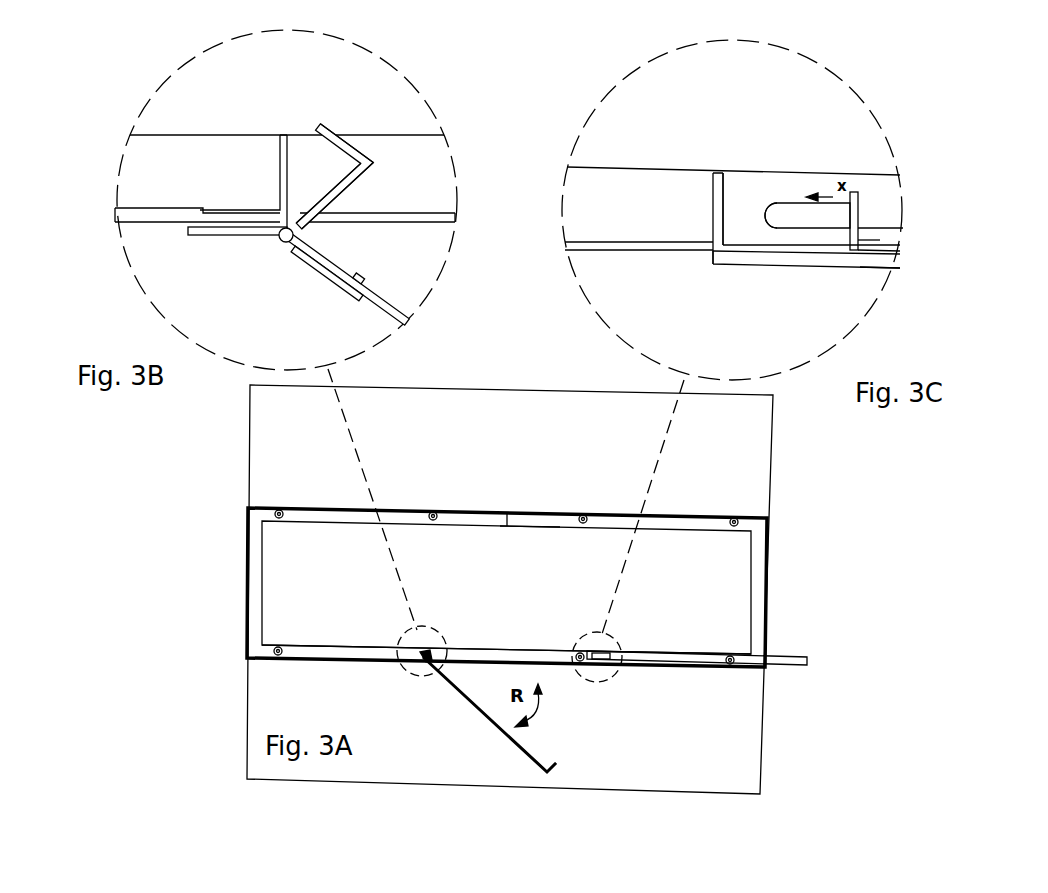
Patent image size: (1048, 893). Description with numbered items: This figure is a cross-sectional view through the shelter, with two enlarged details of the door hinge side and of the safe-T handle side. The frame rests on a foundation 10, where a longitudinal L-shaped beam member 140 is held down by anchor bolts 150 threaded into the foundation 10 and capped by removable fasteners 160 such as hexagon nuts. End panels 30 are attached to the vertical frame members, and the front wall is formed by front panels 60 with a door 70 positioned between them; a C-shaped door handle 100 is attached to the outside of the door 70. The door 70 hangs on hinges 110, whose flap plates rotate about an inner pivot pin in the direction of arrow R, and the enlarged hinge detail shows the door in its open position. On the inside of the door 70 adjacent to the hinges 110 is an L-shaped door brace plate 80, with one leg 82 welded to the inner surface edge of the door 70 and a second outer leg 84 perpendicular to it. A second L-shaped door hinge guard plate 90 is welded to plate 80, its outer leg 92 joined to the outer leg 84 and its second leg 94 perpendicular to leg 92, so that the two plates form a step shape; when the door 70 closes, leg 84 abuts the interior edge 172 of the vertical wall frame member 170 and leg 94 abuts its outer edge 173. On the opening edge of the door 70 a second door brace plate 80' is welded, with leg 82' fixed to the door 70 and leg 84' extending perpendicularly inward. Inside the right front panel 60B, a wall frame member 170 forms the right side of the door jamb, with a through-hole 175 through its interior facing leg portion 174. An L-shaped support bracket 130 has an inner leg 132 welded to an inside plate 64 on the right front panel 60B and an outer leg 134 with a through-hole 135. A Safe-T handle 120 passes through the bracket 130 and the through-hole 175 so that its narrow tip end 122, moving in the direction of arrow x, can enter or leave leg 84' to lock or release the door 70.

In FIG. 3A, the foundation 10 is at (547, 589).
In FIG. 3A, the end panel 30 is at (546, 587).
In FIG. 3B, the front panel 60 is at (262, 240).
In FIG. 3A, the front panel 60 is at (506, 677).
In FIG. 3C, the right front panel 60B is at (806, 282).
In FIG. 3C, the inside plate 64 is at (904, 286).
In FIG. 3B, the door 70 is at (348, 290).
In FIG. 3A, the door 70 is at (462, 716).
In FIG. 3B, the door brace plate 80 is at (390, 264).
In FIG. 3A, the second door brace plate 80' is at (586, 776).
In FIG. 3B, the leg 82 is at (344, 264).
In FIG. 3A, the leg 82' is at (561, 746).
In FIG. 3B, the outer leg 84 is at (328, 188).
In FIG. 3A, the leg 84' is at (614, 745).
In FIG. 3B, the door hinge guard plate 90 is at (315, 141).
In FIG. 3B, the outer leg 92 is at (356, 196).
In FIG. 3B, the second leg 94 is at (354, 128).
In FIG. 3A, the door handle 100 is at (497, 762).
In FIG. 3B, the hinge 110 is at (257, 253).
In FIG. 3C, the Safe-T handle 120 is at (813, 187).
In FIG. 3A, the Safe-T handle 120 is at (731, 678).
In FIG. 3C, the narrow tip end 122 is at (771, 204).
In FIG. 3C, the Safe-T handle support bracket 130 is at (925, 201).
In FIG. 3C, the inner leg 132 is at (921, 231).
In FIG. 3C, the outer leg 134 is at (845, 234).
In FIG. 3C, the through-hole 135 is at (931, 214).
In FIG. 3B, the beam member 140 is at (314, 120).
In FIG. 3C, the beam member 140 is at (733, 162).
In FIG. 3A, the beam member 140 is at (341, 488).
In FIG. 3A, the anchor bolt 150 is at (625, 500).
In FIG. 3A, the removable fastener 160 is at (471, 479).
In FIG. 3B, the wall frame member 170 is at (223, 170).
In FIG. 3C, the wall frame member 170 is at (675, 182).
In FIG. 3A, the wall frame member 170 is at (514, 550).
In FIG. 3B, the interior edge 172 is at (238, 150).
In FIG. 3B, the outer edge 173 is at (239, 106).
In FIG. 3C, the interior facing leg portion 174 is at (771, 233).
In FIG. 3C, the through-hole 175 is at (759, 172).